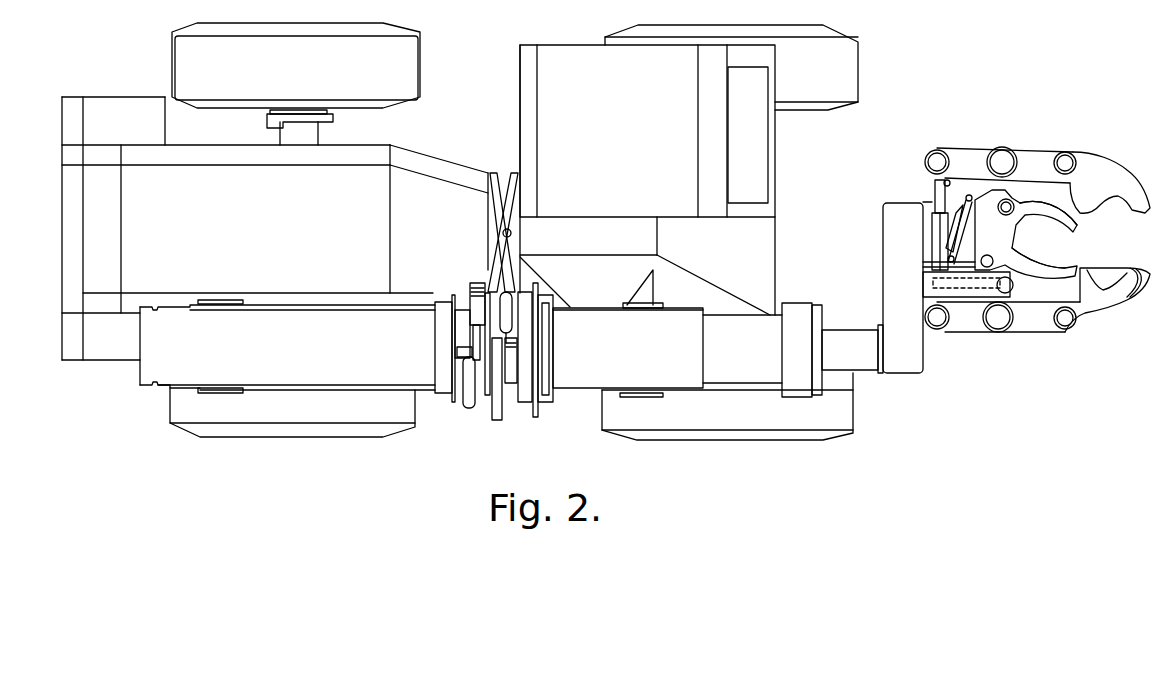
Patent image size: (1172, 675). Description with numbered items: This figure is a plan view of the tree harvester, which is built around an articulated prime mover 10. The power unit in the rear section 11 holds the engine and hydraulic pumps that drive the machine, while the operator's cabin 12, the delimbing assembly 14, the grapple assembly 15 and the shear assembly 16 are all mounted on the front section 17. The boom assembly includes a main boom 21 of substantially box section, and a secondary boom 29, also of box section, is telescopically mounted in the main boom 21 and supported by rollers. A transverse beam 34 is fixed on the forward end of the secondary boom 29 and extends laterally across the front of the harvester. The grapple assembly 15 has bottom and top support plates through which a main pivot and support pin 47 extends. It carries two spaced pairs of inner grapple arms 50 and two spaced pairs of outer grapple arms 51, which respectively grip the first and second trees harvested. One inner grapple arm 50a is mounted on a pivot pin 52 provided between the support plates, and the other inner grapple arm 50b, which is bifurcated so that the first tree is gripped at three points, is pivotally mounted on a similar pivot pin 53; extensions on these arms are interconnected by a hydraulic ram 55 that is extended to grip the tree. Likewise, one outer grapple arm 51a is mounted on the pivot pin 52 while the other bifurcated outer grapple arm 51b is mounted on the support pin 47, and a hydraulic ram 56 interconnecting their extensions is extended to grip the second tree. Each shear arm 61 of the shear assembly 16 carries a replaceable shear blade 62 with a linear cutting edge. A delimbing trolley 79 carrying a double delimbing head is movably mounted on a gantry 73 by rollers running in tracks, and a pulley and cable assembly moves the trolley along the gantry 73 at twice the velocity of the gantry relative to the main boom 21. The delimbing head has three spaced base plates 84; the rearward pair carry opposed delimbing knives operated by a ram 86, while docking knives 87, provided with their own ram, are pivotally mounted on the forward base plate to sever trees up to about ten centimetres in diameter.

The prime mover 10 is at (463, 453).
The rear section 11 is at (115, 360).
The operator's cabin 12 is at (757, 145).
The delimbing assembly 14 is at (523, 408).
The grapple assembly 15 is at (1135, 248).
The shear assembly 16 is at (1047, 148).
The front section 17 is at (774, 248).
The main boom 21 is at (758, 332).
The secondary boom 29 is at (863, 357).
The transverse beam 34 is at (883, 244).
The main pivot and support pin 47 is at (1012, 295).
The inner grapple arms 50 is at (1049, 234).
The inner grapple arm 50a is at (1079, 227).
The inner grapple arm 50b is at (1072, 267).
The outer grapple arms 51 is at (1118, 241).
The outer grapple arm 51a is at (1105, 192).
The outer grapple arm 51b is at (1118, 300).
The pivot pin 52 is at (1008, 200).
The pivot pin 53 is at (986, 268).
The hydraulic ram 55 is at (957, 222).
The hydraulic ram 56 is at (938, 228).
The shear arm 61 is at (1100, 178).
The shear blade 62 is at (1132, 279).
The gantry 73 is at (600, 380).
The delimbing trolley 79 is at (437, 403).
The base plates 84 is at (452, 405).
The ram 86 is at (470, 405).
The docking knives 87 is at (536, 410).